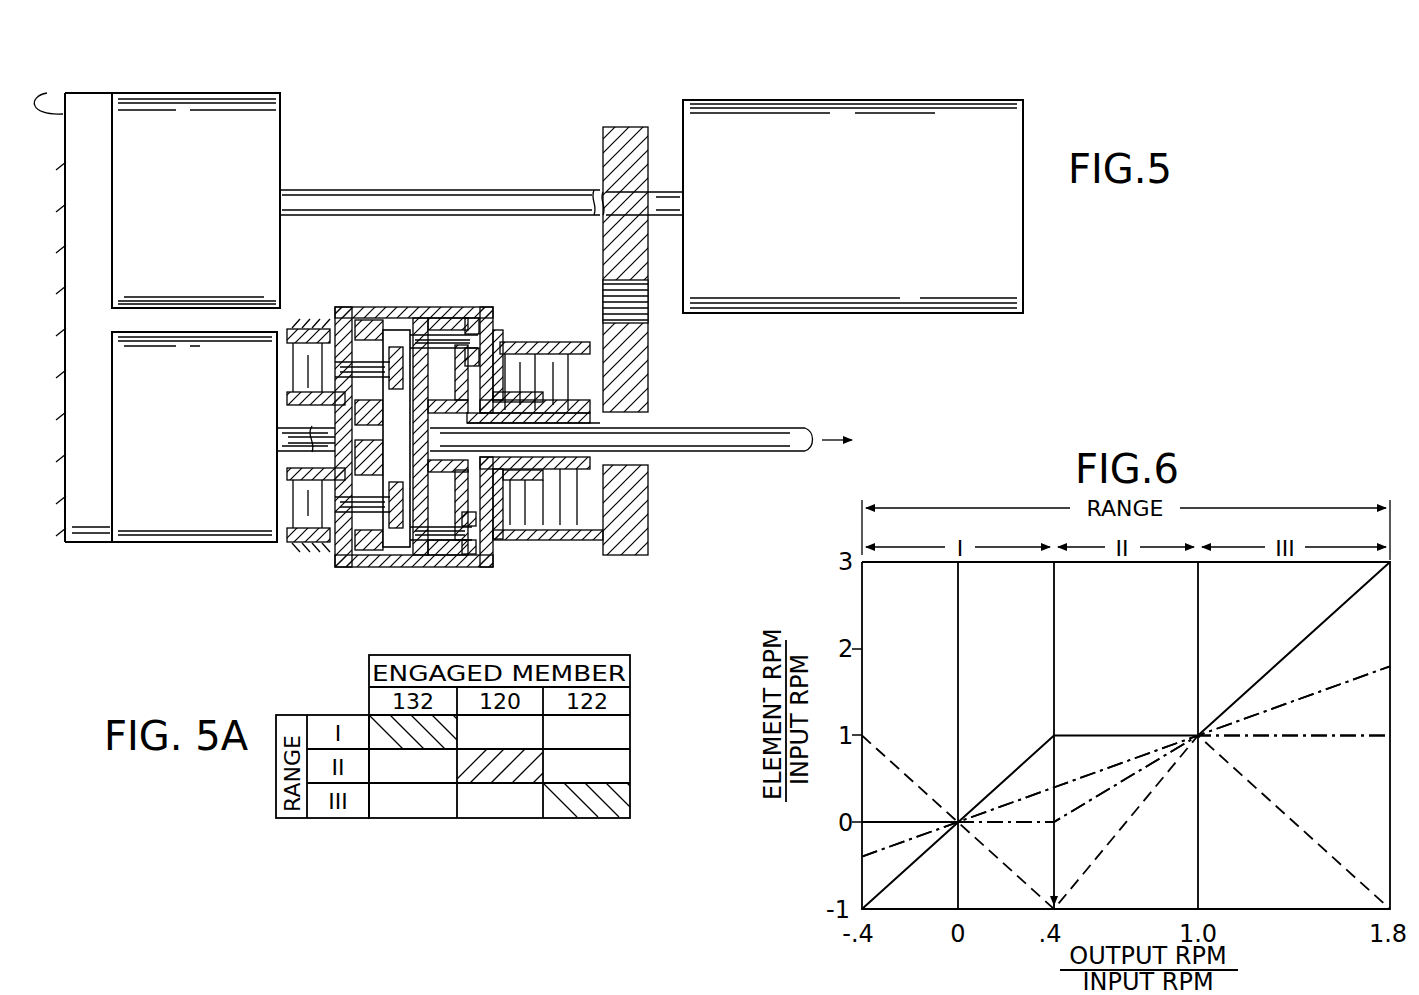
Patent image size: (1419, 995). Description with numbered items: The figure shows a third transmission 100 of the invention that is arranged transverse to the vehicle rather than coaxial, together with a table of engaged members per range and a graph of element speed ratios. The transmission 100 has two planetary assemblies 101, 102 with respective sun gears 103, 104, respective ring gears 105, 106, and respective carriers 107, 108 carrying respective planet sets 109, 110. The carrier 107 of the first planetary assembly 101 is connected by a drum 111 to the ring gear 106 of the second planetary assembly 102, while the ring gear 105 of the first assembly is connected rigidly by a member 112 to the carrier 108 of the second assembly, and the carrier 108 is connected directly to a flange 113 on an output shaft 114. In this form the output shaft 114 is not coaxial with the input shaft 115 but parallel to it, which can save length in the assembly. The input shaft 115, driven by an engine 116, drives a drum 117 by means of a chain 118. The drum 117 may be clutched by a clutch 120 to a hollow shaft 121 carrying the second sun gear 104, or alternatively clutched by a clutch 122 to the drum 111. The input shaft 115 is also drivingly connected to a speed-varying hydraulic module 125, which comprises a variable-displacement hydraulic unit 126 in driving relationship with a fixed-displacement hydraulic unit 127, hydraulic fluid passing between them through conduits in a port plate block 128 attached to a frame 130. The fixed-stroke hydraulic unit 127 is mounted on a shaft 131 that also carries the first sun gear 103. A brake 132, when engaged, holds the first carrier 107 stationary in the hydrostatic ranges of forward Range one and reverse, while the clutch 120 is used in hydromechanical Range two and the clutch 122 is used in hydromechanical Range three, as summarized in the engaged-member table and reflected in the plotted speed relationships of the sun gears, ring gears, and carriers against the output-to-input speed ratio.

In FIG. 5, the third transmission 100 is at (502, 298).
In FIG. 5, the first planetary assembly 101 is at (353, 300).
In FIG. 5, the second planetary assembly 102 is at (432, 300).
In FIG. 5, the first sun gear 103 is at (336, 420).
In FIG. 6, the first sun gear 103 is at (890, 744).
In FIG. 5, the second sun gear 104 is at (470, 512).
In FIG. 6, the second sun gear 104 is at (1314, 636).
In FIG. 5, the first ring gear 105 is at (378, 328).
In FIG. 6, the first ring gear 105 is at (830, 882).
In FIG. 5, the second ring gear 106 is at (465, 545).
In FIG. 6, the second ring gear 106 is at (1282, 760).
In FIG. 5, the first carrier 107 is at (340, 330).
In FIG. 6, the first carrier 107 is at (1126, 779).
In FIG. 5, the second carrier 108 is at (478, 330).
In FIG. 6, the second carrier 108 is at (1126, 761).
In FIG. 5, the first planet set 109 is at (340, 545).
In FIG. 5, the second planet set 110 is at (450, 335).
In FIG. 5, the drum 111 is at (378, 562).
In FIG. 5, the member 112 is at (398, 548).
In FIG. 5, the flange 113 is at (420, 556).
In FIG. 5, the output shaft 114 is at (760, 432).
In FIG. 5, the input shaft 115 is at (452, 192).
In FIG. 5, the engine 116 is at (869, 184).
In FIG. 5, the drum 117 is at (586, 328).
In FIG. 5, the chain 118 is at (645, 313).
In FIG. 5, the clutch 120 is at (578, 384).
In FIG. 5, the hollow shaft 121 is at (597, 418).
In FIG. 5, the clutch 122 is at (530, 378).
In FIG. 5, the speed-varying hydraulic module 125 is at (113, 557).
In FIG. 5, the variable-displacement hydraulic unit 126 is at (214, 254).
In FIG. 5, the fixed-displacement hydraulic unit 127 is at (214, 401).
In FIG. 5, the port plate block 128 is at (108, 294).
In FIG. 5, the frame 130 is at (290, 560).
In FIG. 5, the shaft 131 is at (290, 440).
In FIG. 5, the brake 132 is at (293, 364).